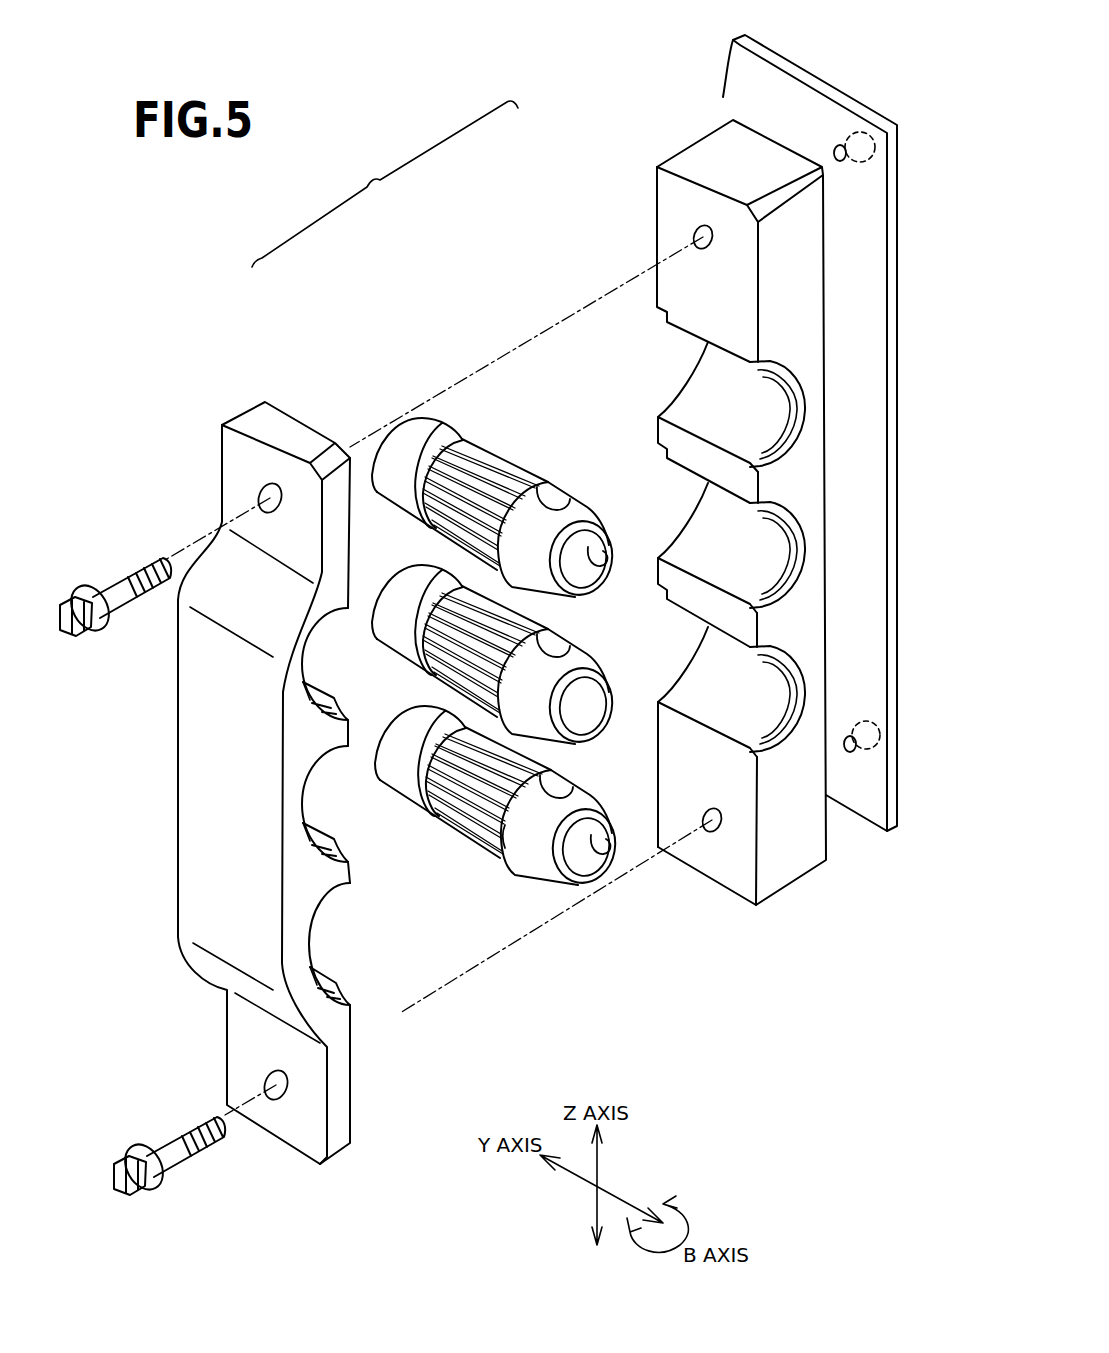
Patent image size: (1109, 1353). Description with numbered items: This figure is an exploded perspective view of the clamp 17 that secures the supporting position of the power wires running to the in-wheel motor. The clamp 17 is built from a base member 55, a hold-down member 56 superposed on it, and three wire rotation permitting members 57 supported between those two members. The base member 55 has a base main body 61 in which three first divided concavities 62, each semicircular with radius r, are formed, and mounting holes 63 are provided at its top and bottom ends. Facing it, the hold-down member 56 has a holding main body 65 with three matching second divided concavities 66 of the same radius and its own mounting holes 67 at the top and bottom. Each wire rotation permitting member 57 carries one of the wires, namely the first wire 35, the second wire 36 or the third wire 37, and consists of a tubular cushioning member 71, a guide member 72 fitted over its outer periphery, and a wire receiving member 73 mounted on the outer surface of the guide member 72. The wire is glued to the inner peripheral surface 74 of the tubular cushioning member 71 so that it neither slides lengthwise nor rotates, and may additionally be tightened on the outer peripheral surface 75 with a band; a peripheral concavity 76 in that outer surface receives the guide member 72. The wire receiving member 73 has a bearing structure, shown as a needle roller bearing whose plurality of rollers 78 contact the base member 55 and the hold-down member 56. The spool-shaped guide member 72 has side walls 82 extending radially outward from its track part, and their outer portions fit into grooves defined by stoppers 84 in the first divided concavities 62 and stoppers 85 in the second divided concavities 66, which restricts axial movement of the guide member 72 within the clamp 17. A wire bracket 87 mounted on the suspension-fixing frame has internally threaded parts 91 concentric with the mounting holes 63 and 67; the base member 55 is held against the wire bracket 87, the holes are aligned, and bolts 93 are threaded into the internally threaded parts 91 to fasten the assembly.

The clamp 17 is at (385, 184).
The first wire 35 is at (647, 563).
The second wire 36 is at (673, 690).
The third wire 37 is at (657, 908).
The base member 55 is at (614, 551).
The hold-down member 56 is at (296, 420).
The wire rotation permitting members 57 is at (396, 695).
The base main body 61 is at (677, 276).
The first divided concavities 62 is at (720, 387).
The mounting holes 63 is at (700, 230).
The holding main body 65 is at (236, 709).
The second divided concavities 66 is at (310, 670).
The mounting holes 67 is at (262, 496).
The tubular cushioning member 71 is at (513, 660).
The guide member 72 is at (503, 468).
The wire receiving member 73 is at (508, 470).
The inner peripheral surface 74 is at (613, 560).
The outer peripheral surface 75 is at (513, 877).
The peripheral concavity 76 is at (520, 863).
The rollers 78 is at (488, 447).
The side walls 82 is at (464, 432).
The stoppers 84 is at (698, 370).
The stoppers 85 is at (320, 703).
The wire bracket 87 is at (843, 465).
The internally threaded parts 91 is at (846, 160).
The bolts 93 is at (108, 585).